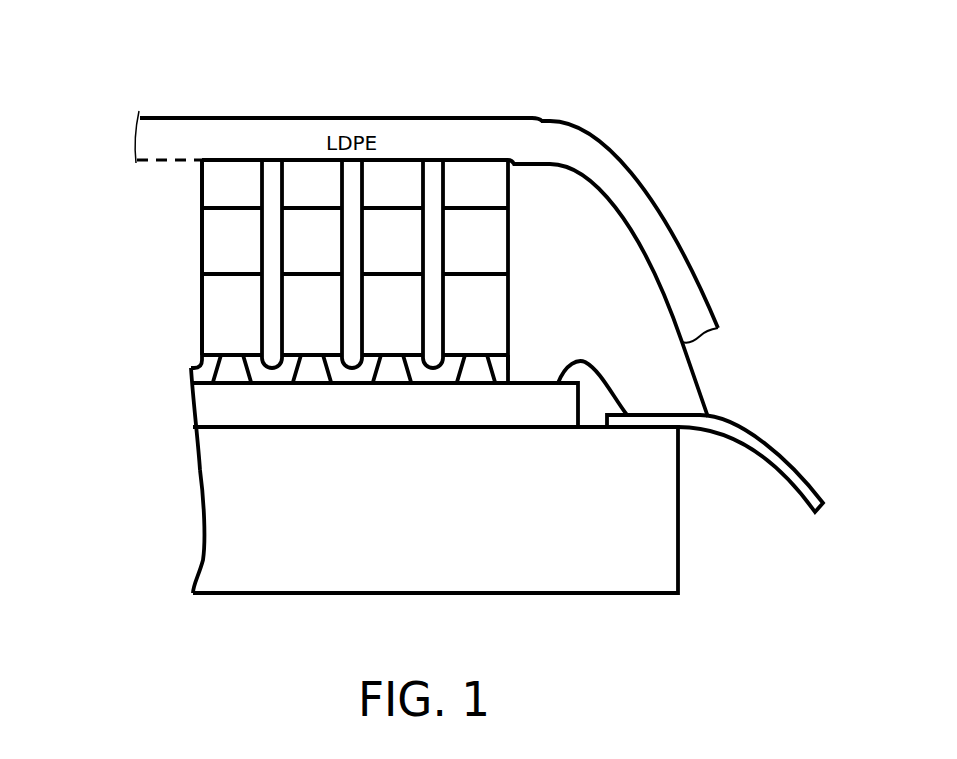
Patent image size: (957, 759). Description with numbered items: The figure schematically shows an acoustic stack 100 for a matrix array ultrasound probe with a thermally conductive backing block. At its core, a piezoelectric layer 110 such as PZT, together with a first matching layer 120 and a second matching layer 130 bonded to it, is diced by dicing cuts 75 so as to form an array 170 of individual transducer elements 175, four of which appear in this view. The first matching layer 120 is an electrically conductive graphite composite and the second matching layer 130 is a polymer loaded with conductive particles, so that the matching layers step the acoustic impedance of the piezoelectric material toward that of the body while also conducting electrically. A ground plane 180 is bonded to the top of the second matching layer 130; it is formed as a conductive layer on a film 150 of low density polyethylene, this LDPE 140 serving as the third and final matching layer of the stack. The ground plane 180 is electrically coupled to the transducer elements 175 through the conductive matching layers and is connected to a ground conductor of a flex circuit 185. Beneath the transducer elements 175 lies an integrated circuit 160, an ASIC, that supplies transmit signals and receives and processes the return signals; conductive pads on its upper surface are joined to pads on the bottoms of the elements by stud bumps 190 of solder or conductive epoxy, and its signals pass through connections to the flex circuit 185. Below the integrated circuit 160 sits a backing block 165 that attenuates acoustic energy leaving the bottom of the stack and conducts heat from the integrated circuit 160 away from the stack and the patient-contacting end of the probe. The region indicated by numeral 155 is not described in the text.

The acoustic stack 100 is at (98, 70).
The low density polyethylene (LDPE) / third matching layer 140 is at (354, 116).
The film 150 is at (672, 214).
The piezoelectric layer 110 is at (518, 323).
The second matching layer 130 is at (202, 192).
The first matching layer 120 is at (202, 250).
The transducer elements 175 is at (202, 321).
The dicing cuts 75 is at (283, 320).
The array 170 is at (518, 287).
The support layer 155 is at (518, 361).
The integrated circuit 160 is at (193, 405).
The backing block 165 is at (203, 528).
The ground plane 180 is at (700, 370).
The flex circuit 185 is at (773, 443).
The stud bumps 190 is at (490, 372).